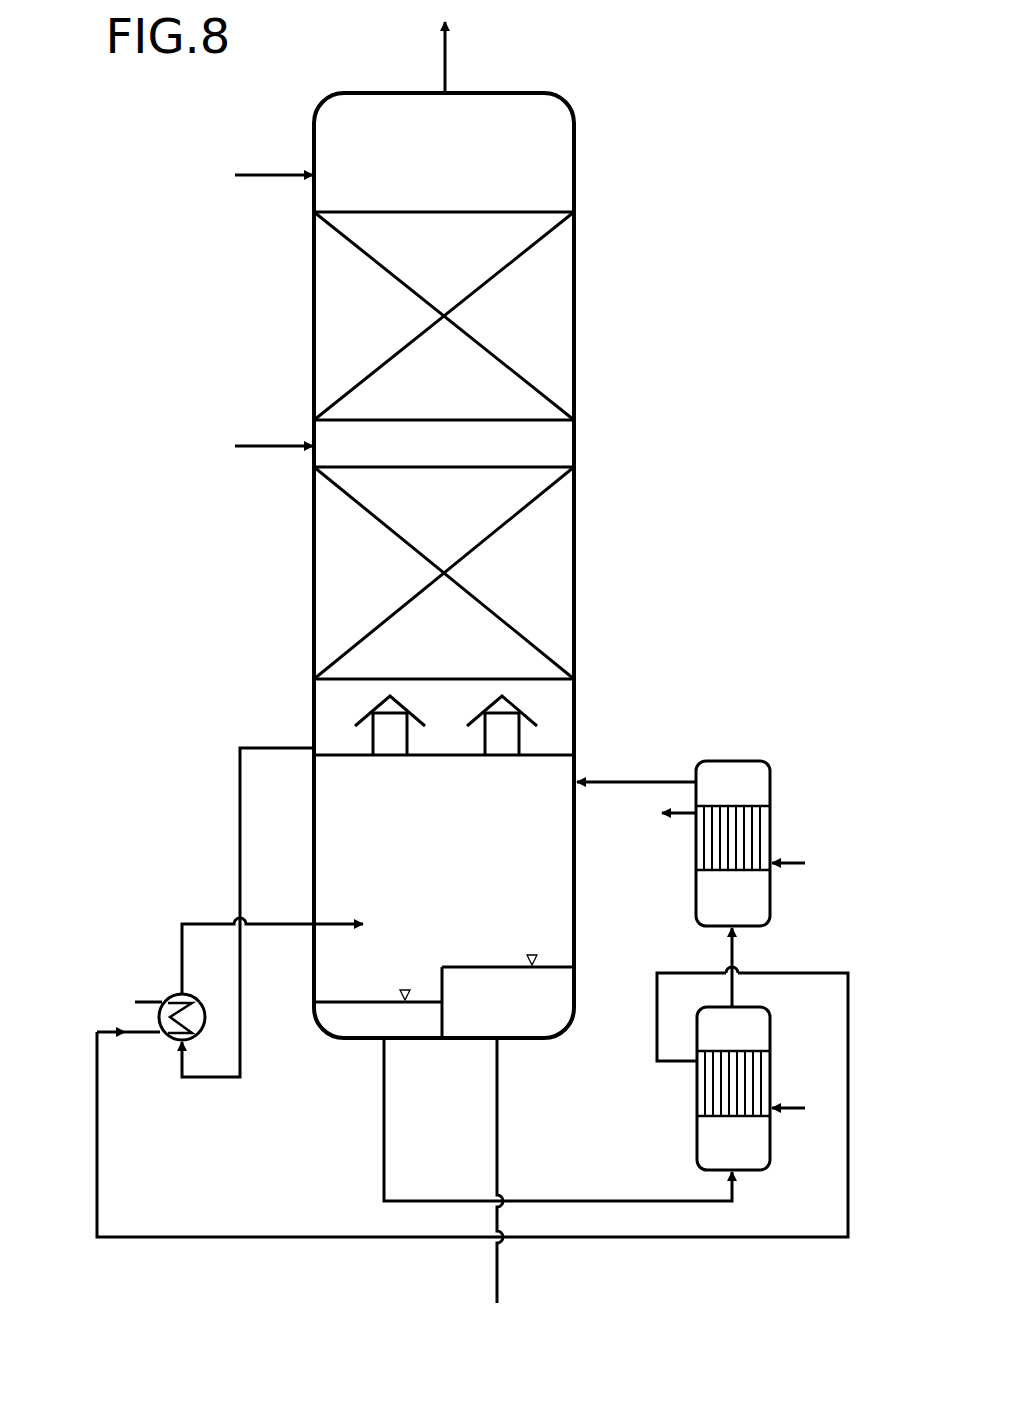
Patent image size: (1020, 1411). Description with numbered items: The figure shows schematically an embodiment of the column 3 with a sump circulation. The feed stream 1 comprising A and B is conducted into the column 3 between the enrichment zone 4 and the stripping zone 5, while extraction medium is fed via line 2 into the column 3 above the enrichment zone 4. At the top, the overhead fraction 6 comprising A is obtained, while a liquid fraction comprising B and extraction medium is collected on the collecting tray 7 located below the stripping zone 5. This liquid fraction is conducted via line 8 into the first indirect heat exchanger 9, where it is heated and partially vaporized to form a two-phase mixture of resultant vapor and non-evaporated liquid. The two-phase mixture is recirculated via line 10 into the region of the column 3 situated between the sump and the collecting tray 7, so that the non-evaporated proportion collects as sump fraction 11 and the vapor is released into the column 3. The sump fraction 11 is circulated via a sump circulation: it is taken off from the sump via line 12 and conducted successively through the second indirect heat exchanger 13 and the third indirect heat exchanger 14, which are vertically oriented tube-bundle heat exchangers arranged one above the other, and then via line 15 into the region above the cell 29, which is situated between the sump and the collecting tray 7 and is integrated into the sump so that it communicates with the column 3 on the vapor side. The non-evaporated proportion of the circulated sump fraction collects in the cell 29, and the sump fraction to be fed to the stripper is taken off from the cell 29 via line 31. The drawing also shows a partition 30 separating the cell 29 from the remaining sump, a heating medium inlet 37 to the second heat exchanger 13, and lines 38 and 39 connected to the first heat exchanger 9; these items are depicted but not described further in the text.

The feed stream 1 is at (272, 445).
The line for extraction medium 2 is at (273, 172).
The column 3 is at (578, 171).
The enrichment zone 4 is at (548, 393).
The stripping zone 5 is at (548, 656).
The overhead fraction 6 is at (445, 64).
The collecting tray 7 is at (562, 748).
The line 8 is at (272, 748).
The first indirect heat exchanger 9 is at (166, 1000).
The line 10 is at (207, 923).
The sump fraction 11 is at (340, 1022).
The line 12 is at (382, 1122).
The second indirect heat exchanger 13 is at (715, 1083).
The third indirect heat exchanger 14 is at (752, 838).
The line 15 is at (640, 780).
The cell 29 is at (523, 1027).
The partition wall 30 is at (438, 983).
The line 31 is at (498, 1270).
The heating medium inlet 37 is at (800, 1105).
The heating medium line 38 is at (105, 1035).
The heating medium outlet 39 is at (142, 1001).